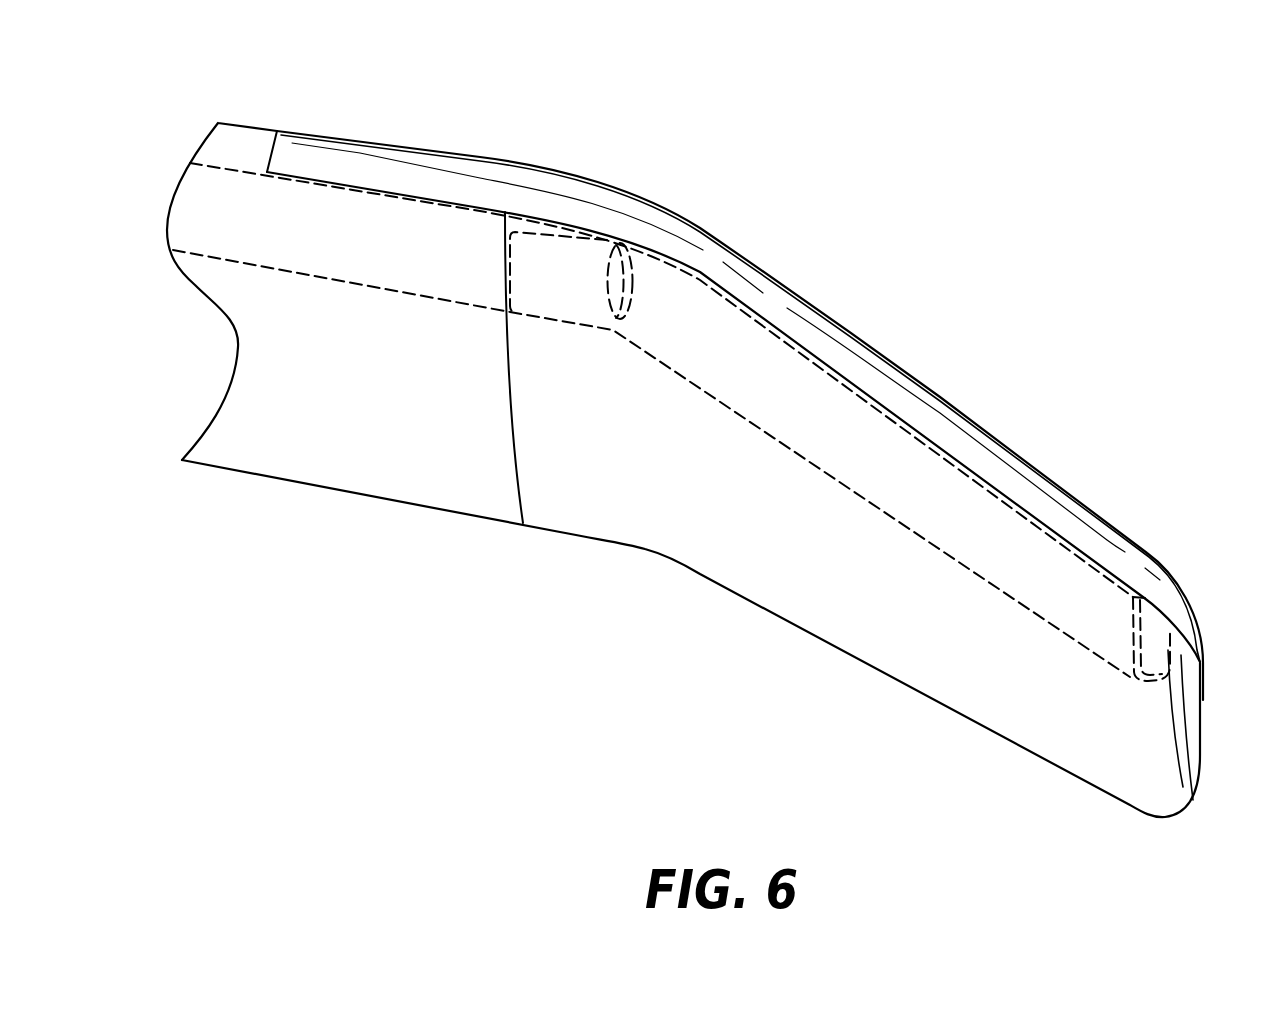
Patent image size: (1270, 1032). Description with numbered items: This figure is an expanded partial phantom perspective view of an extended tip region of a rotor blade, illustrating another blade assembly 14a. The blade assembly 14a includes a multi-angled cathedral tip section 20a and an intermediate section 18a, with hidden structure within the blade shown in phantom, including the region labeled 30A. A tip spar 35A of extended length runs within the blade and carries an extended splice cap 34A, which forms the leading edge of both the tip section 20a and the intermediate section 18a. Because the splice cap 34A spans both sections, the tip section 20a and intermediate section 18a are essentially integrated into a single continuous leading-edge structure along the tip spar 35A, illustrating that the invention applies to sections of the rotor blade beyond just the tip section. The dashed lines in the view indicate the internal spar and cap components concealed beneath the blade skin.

The blade assembly 14a is at (685, 418).
The intermediate section 18a is at (300, 435).
The tip section 20a is at (735, 451).
The hidden recess / channel 30A is at (422, 282).
The extended splice cap 34A is at (715, 253).
The tip spar 35A is at (967, 508).